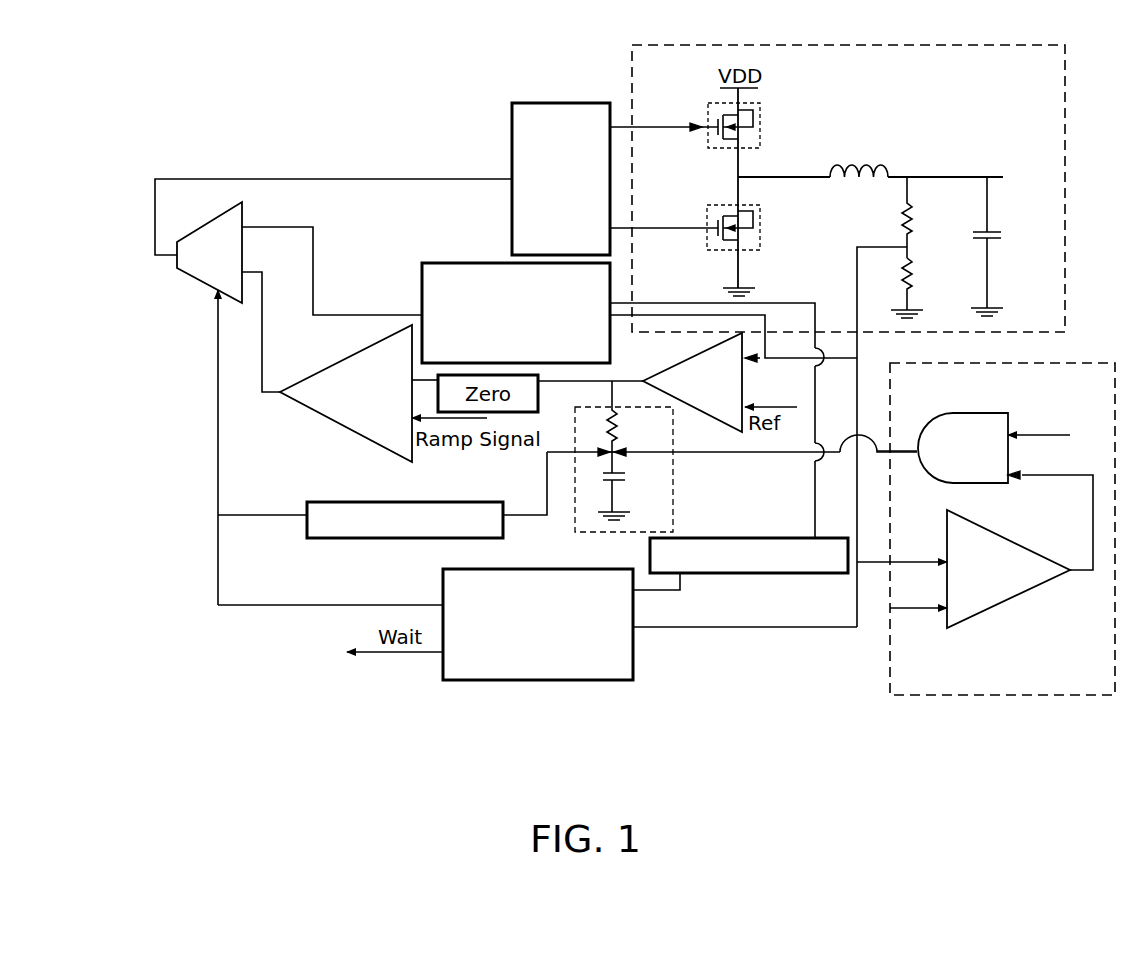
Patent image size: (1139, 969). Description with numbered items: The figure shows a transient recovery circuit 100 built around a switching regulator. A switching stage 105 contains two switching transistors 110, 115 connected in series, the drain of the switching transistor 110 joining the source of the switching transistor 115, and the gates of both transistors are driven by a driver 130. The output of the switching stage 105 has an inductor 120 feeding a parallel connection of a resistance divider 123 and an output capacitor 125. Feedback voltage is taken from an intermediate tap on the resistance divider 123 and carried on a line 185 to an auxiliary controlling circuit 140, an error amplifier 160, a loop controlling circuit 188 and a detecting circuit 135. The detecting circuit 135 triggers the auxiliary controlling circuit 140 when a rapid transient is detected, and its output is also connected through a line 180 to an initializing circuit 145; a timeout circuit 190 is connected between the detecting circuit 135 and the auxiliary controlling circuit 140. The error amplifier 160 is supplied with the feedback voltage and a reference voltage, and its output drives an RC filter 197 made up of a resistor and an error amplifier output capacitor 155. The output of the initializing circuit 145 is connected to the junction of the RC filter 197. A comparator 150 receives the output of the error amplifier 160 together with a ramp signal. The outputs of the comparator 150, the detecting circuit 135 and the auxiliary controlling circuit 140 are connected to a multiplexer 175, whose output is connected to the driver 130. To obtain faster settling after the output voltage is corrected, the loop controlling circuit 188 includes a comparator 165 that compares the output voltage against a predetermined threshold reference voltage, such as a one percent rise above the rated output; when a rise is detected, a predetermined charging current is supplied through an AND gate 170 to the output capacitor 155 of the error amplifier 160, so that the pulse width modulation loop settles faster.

The transient recovery circuit 100 is at (237, 95).
The switching stage 105 is at (1065, 293).
The switching transistor 110 is at (760, 128).
The switching transistor 115 is at (760, 230).
The inductor 120 is at (880, 167).
The resistance divider 123 is at (910, 293).
The output capacitor 125 is at (1001, 233).
The driver 130 is at (512, 192).
The detecting circuit 135 is at (443, 671).
The auxiliary controlling circuit 140 is at (422, 279).
The initializing circuit 145 is at (307, 526).
The comparator 150 is at (330, 419).
The error amplifier output capacitor 155 is at (620, 478).
The error amplifier 160 is at (742, 372).
The comparator 165 is at (947, 622).
The AND gate 170 is at (957, 413).
The multiplexer 175 is at (195, 279).
The line 180 is at (310, 606).
The line 185 is at (800, 628).
The loop controlling circuit 188 is at (975, 549).
The timeout circuit 190 is at (782, 538).
The RC filter 197 is at (654, 456).